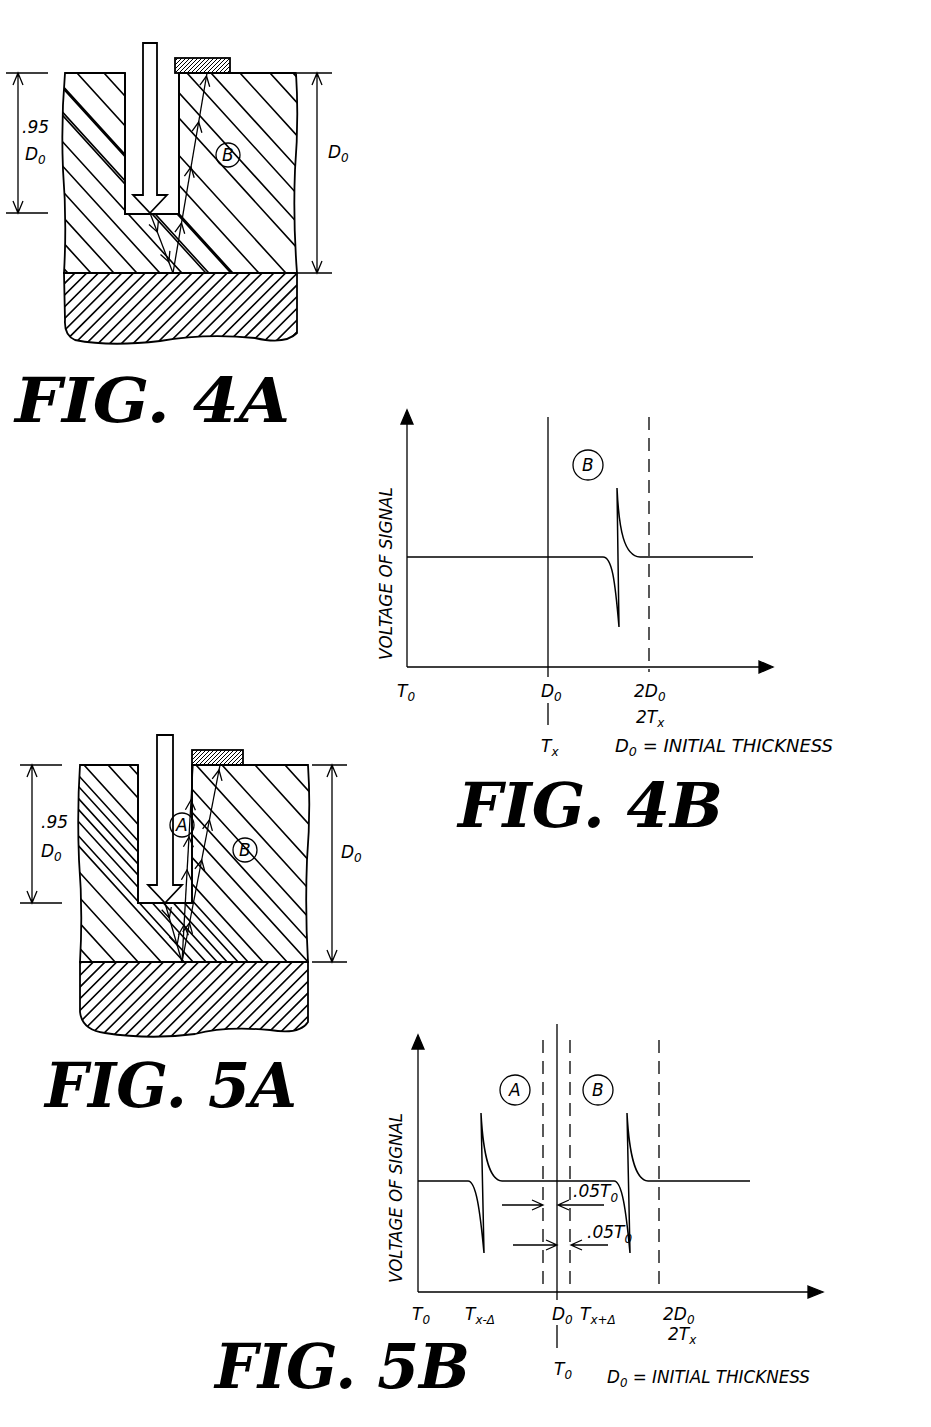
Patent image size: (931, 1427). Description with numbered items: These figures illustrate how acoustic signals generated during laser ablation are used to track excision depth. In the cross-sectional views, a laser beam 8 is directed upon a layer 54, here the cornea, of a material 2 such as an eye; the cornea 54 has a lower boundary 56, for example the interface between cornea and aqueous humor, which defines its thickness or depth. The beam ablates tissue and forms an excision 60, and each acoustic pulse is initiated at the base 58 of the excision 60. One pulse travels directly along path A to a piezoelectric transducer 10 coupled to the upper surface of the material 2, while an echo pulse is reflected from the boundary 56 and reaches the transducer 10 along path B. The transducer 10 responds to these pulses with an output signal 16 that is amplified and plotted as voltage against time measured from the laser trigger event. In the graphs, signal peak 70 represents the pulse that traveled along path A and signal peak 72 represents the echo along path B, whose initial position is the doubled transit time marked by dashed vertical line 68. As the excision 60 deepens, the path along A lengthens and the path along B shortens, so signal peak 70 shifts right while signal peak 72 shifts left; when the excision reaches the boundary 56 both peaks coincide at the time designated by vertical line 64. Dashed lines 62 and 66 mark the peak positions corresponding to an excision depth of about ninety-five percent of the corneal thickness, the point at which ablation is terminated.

In FIG. 4A, the material 2 is at (266, 216).
In FIG. 5A, the material 2 is at (278, 921).
In FIG. 4A, the laser beam 8 is at (158, 48).
In FIG. 5A, the laser beam 8 is at (171, 740).
In FIG. 4A, the transducer 10 is at (210, 58).
In FIG. 5A, the transducer 10 is at (213, 750).
In FIG. 4A, the layer 54 is at (258, 254).
In FIG. 5A, the layer 54 is at (283, 940).
In FIG. 4A, the lower boundary 56 is at (268, 282).
In FIG. 5A, the lower boundary 56 is at (283, 968).
In FIG. 4A, the base of the excision 58 is at (138, 228).
In FIG. 5A, the base of the excision 58 is at (148, 922).
In FIG. 4A, the excision 60 is at (128, 100).
In FIG. 5A, the excision 60 is at (147, 791).
In FIG. 4B, the output signal 16 is at (407, 504).
In FIG. 5B, the output signal 16 is at (418, 1098).
In FIG. 5B, the dashed line 62 is at (543, 1058).
In FIG. 4B, the vertical line 64 is at (548, 426).
In FIG. 5B, the vertical line 64 is at (557, 1032).
In FIG. 5B, the dashed line 66 is at (570, 1058).
In FIG. 4B, the dashed vertical line 68 is at (649, 448).
In FIG. 5B, the dashed vertical line 68 is at (659, 1062).
In FIG. 5B, the signal peak 70 is at (482, 1222).
In FIG. 4B, the signal peak 72 is at (620, 583).
In FIG. 5B, the signal peak 72 is at (628, 1222).